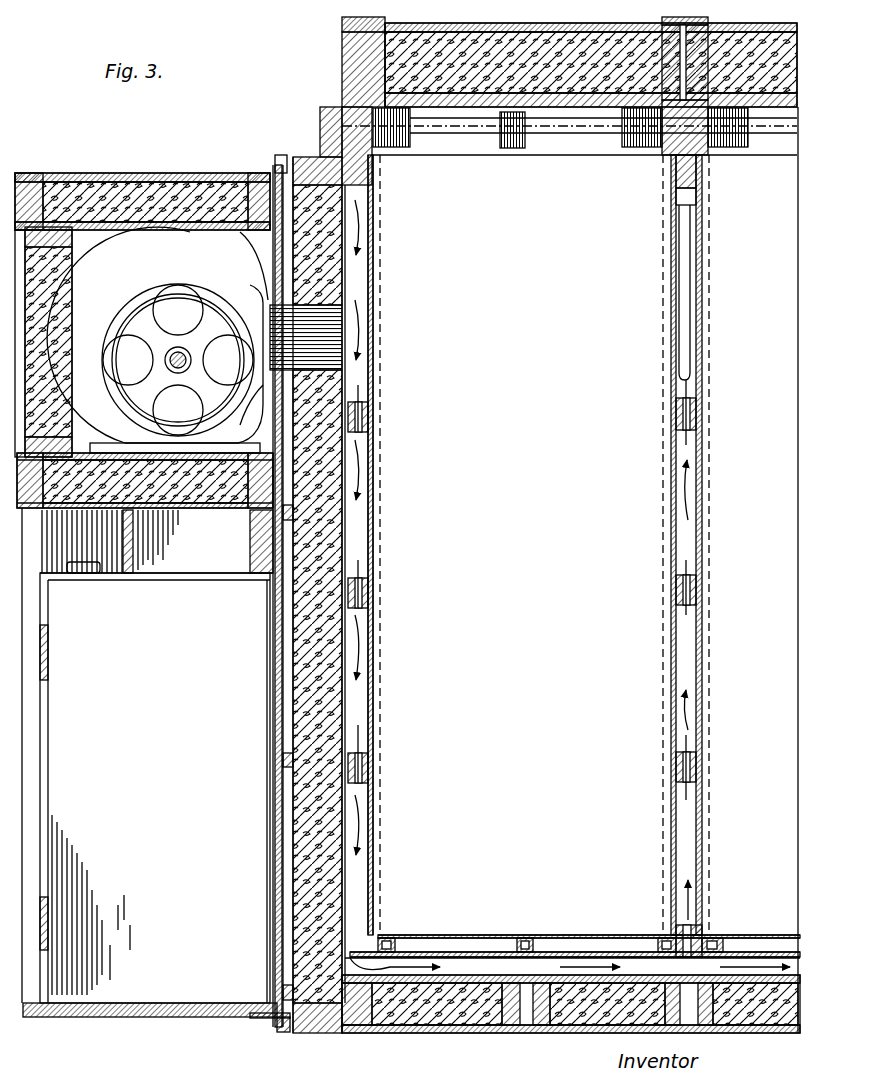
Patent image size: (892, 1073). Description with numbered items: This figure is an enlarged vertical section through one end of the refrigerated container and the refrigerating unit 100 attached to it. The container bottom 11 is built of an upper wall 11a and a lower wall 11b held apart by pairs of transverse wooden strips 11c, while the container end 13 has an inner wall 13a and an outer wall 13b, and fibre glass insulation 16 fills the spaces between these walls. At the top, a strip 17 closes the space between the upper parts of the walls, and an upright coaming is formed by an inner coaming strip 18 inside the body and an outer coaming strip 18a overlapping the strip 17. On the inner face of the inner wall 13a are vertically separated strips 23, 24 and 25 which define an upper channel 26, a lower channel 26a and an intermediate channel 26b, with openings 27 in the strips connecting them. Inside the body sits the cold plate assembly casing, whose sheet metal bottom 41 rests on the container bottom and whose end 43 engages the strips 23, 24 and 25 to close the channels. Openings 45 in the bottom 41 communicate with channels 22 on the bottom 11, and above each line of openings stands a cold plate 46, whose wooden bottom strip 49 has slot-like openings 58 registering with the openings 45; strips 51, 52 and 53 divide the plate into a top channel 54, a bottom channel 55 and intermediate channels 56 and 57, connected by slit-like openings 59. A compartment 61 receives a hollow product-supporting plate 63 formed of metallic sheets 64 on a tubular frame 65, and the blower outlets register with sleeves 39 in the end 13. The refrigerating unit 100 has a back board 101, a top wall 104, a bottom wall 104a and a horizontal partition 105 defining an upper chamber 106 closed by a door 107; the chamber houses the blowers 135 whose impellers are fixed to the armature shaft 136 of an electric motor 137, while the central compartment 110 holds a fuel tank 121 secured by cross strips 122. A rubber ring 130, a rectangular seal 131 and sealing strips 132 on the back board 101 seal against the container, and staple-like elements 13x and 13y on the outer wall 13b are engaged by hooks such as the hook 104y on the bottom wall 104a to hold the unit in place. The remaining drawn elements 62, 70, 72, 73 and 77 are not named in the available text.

The bottom 11 is at (486, 1036).
The upper wall 11a is at (466, 975).
The lower wall 11b is at (442, 1028).
The transverse wooden strips 11c is at (515, 1028).
The end 13 is at (306, 160).
The inner wall 13a is at (350, 696).
The outer wall 13b is at (296, 706).
The staple-like element 13x is at (282, 165).
The staple-like element 13y is at (285, 1035).
The insulation 16 is at (318, 826).
The strip 17 is at (347, 165).
The inner coaming strip 18 is at (356, 196).
The outer coaming strip 18a is at (325, 108).
The channels 22 is at (506, 942).
The strip 23 is at (372, 415).
The strip 24 is at (372, 592).
The strip 25 is at (372, 771).
The upper channel 26 is at (356, 236).
The lower channel 26a is at (358, 857).
The intermediate channel 26b is at (360, 491).
The openings 27 is at (370, 406).
The sleeves 39 is at (330, 263).
The bottom 41 is at (436, 952).
The end 43 is at (672, 180).
The openings 45 is at (724, 940).
The cold plate 46 is at (670, 292).
The bottom strip 49 is at (704, 930).
The strip 51 is at (674, 766).
The strip 52 is at (674, 593).
The strip 53 is at (674, 416).
The top channel 54 is at (692, 196).
The bottom channel 55 is at (690, 828).
The intermediate channel 56 is at (690, 461).
The intermediate channel 57 is at (690, 668).
The slot-like openings 58 is at (682, 930).
The slit-like openings 59 is at (690, 411).
The compartment 61 is at (686, 241).
The bearing block 62 is at (670, 158).
The product-supporting plate 63 is at (548, 936).
The metallic sheets 64 is at (616, 940).
The frame 65 is at (390, 936).
The ceiling and shaft 70 is at (578, 136).
The roller 72 is at (412, 140).
The roller 73 is at (512, 150).
The guide lines 77 is at (383, 626).
The unit 100 is at (186, 174).
The back board 101 is at (276, 600).
The top wall 104 is at (106, 182).
The bottom wall 104a is at (166, 1010).
The hook 104y is at (265, 1016).
The horizontal partition 105 is at (226, 512).
The chamber 106 is at (120, 240).
The door 107 is at (60, 228).
The central compartment 110 is at (50, 806).
The fuel tank 121 is at (181, 594).
The cross strips 122 is at (46, 646).
The rubber ring 130 is at (288, 306).
The rectangular seal 131 is at (288, 510).
The sealing strips 132 is at (284, 759).
The blower 135 is at (128, 250).
The armature shaft 136 is at (170, 359).
The electric motor 137 is at (180, 292).